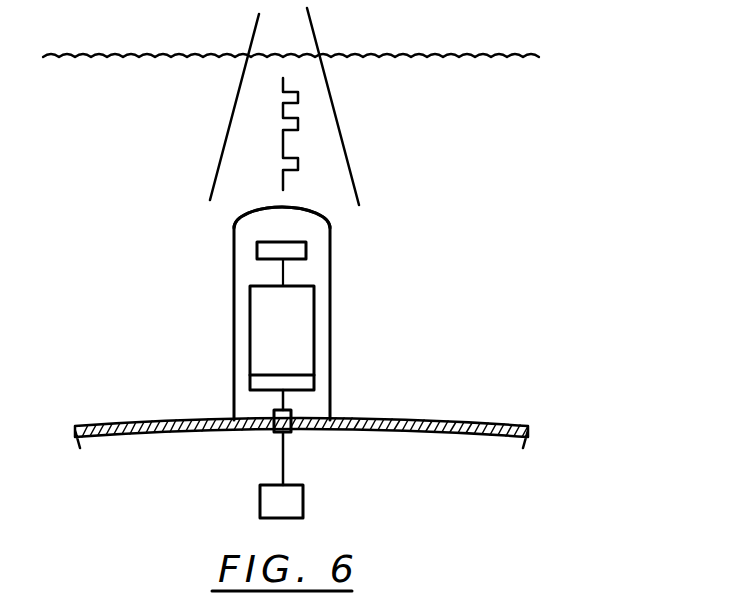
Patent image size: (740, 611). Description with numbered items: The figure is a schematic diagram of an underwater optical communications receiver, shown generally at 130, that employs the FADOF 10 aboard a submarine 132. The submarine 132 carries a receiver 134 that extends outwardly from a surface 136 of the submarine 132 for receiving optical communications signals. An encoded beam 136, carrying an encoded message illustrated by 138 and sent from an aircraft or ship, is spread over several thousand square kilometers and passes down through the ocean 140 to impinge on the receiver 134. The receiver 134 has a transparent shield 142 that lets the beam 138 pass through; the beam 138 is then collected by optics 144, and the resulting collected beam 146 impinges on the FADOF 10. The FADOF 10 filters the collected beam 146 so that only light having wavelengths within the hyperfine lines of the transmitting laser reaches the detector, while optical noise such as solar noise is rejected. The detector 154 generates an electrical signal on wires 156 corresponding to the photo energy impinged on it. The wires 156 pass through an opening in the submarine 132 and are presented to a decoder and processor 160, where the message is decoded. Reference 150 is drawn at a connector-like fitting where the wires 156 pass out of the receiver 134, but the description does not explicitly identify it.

The FADOF 10 is at (313, 343).
The underwater optical communications receiver 130 is at (556, 137).
The submarine 132 is at (547, 505).
The receiver 134 is at (331, 285).
The encoded beam 136 is at (256, 31).
The encoded message 138 is at (298, 97).
The ocean 140 is at (482, 141).
The transparent shield 142 is at (233, 229).
The optics 144 is at (300, 247).
The collected beam 146 is at (171, 295).
The connector 150 is at (293, 428).
The detector 154 is at (300, 384).
The wires 156 is at (282, 402).
The decoder and processor 160 is at (303, 508).